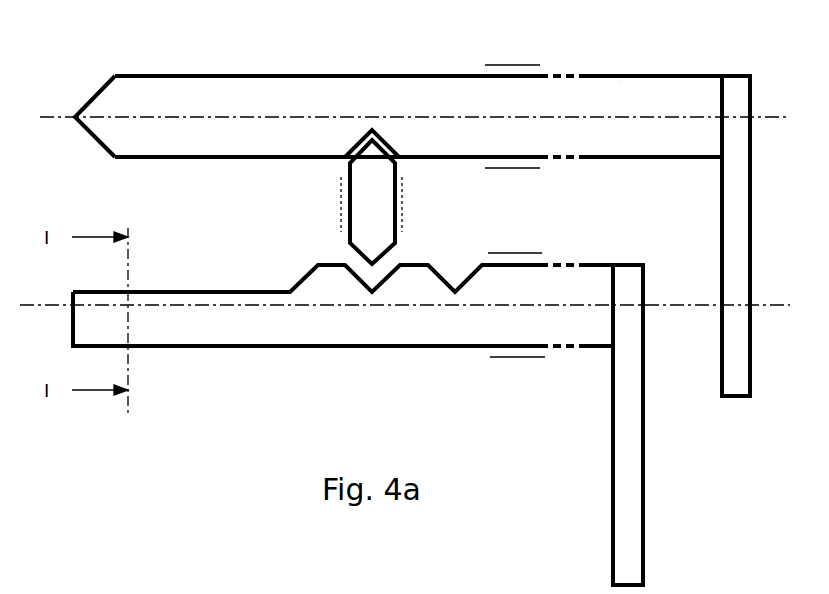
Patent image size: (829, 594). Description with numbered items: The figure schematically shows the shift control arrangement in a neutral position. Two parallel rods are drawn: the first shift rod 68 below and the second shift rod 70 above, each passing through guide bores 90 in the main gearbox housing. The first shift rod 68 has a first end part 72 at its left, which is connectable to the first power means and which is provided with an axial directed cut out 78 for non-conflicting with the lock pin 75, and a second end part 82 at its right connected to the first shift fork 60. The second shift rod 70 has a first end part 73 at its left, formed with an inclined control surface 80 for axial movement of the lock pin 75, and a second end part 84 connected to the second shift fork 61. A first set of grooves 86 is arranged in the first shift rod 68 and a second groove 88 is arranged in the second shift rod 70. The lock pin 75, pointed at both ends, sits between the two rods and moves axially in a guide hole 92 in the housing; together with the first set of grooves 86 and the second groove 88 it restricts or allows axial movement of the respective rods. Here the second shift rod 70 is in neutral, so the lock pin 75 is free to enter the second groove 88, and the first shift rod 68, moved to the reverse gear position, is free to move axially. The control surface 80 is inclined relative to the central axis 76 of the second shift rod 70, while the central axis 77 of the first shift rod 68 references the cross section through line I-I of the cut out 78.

The first shift fork 60 is at (613, 418).
The second shift fork 61 is at (722, 215).
The first shift rod 68 is at (305, 347).
The second shift rod 70 is at (245, 76).
The first end part of the first shift rod 72 is at (100, 348).
The first end part of the second shift rod 73 is at (133, 76).
The lock pin 75 is at (350, 170).
The central axis of the second shift rod 76 is at (630, 110).
The central axis of the first shift rod 77 is at (228, 315).
The axial directed cut out 78 is at (185, 292).
The control surface 80 is at (103, 150).
The second end part of the first shift rod 82 is at (600, 265).
The second end part of the second shift rod 84 is at (704, 76).
The first set of grooves 86 is at (439, 255).
The second groove 88 is at (388, 148).
The guide bores 90 is at (507, 65).
The guide hole 92 is at (340, 215).